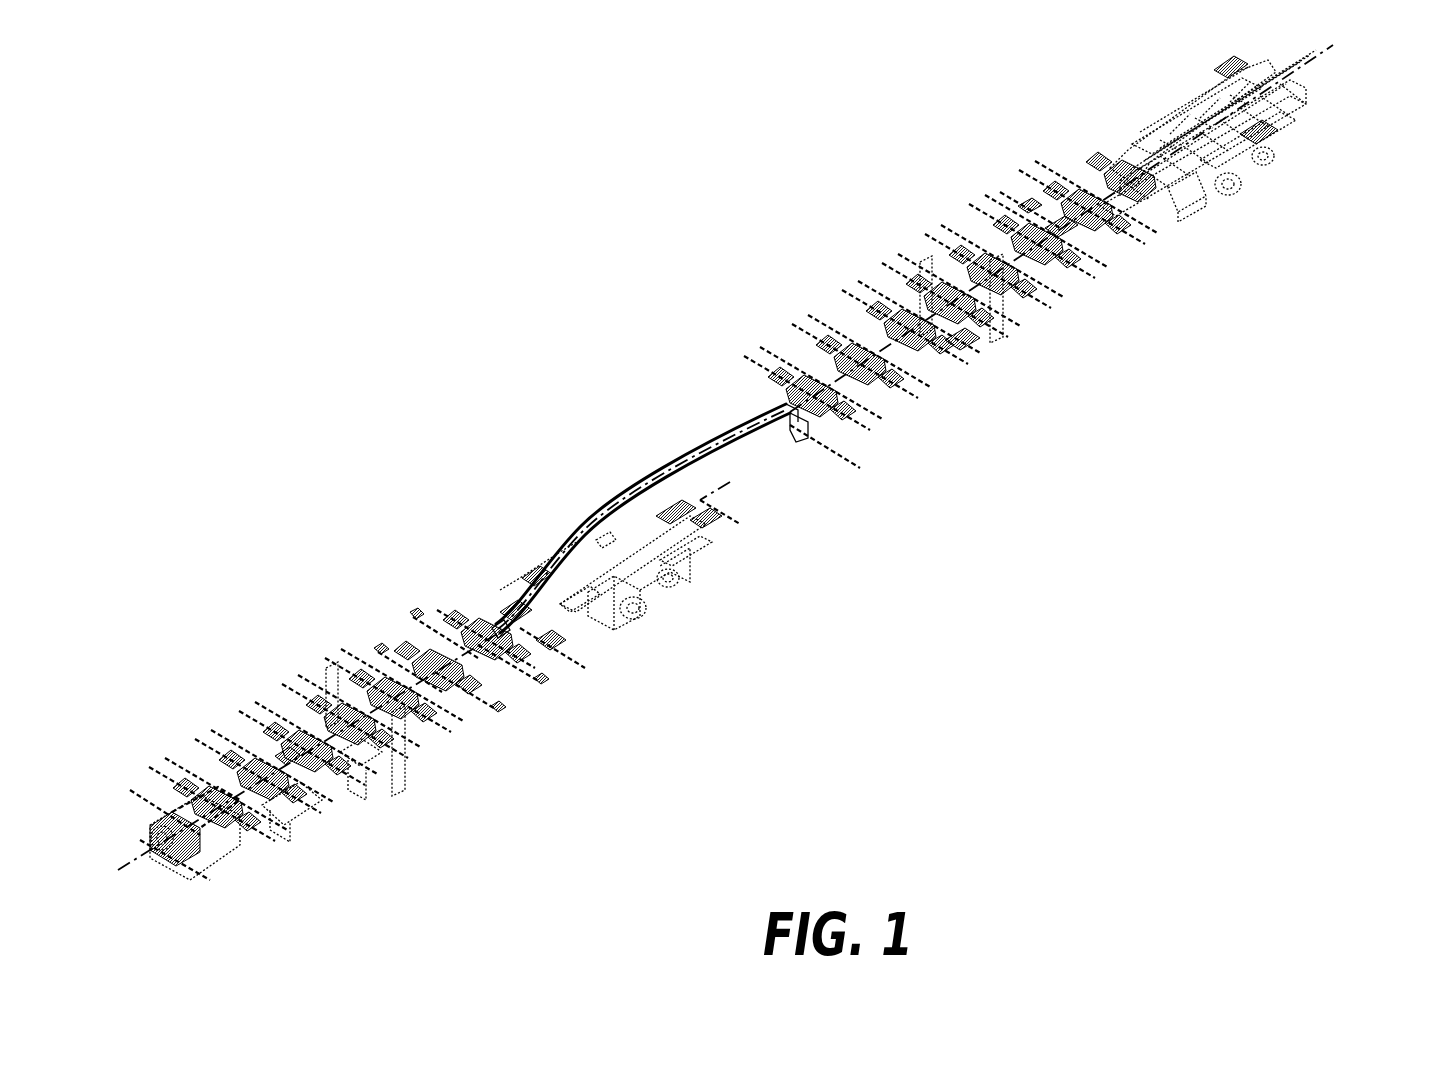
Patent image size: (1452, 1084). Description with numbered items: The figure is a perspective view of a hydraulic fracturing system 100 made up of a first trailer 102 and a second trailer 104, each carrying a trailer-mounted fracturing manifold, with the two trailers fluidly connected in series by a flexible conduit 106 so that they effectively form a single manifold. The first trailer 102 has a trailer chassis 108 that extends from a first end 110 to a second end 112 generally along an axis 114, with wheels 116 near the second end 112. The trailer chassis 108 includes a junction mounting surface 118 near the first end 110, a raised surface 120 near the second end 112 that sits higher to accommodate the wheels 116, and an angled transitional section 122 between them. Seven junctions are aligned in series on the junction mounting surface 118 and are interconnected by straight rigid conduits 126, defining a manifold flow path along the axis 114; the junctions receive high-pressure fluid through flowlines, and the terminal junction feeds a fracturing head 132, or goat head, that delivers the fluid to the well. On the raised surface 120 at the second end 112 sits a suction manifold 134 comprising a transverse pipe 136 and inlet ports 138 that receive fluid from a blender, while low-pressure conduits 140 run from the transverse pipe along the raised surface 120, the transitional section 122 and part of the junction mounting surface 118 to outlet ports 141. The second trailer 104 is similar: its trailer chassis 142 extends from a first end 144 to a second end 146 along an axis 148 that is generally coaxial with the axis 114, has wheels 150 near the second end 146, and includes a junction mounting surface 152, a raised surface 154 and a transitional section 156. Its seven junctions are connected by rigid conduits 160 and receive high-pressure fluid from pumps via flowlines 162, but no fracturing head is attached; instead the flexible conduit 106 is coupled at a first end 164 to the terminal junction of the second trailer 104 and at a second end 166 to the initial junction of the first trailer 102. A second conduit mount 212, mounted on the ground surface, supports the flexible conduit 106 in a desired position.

The hydraulic fracturing system 100 is at (375, 188).
The first trailer 102 is at (308, 463).
The second trailer 104 is at (832, 150).
The flexible conduit 106 is at (670, 470).
The trailer chassis 108 is at (290, 830).
The first end 110 is at (178, 903).
The second end 112 is at (807, 515).
The axis 114 is at (728, 483).
The wheels 116 is at (650, 593).
The junction mounting surface 118 is at (355, 757).
The raised surface 120 is at (602, 537).
The transitional section 122 is at (530, 577).
The rigid conduits 126 is at (285, 763).
The fracturing head 132 is at (157, 830).
The suction manifold 134 is at (683, 545).
The transverse pipe 136 is at (673, 510).
The inlet ports 138 is at (708, 513).
The low-pressure conduits 140 is at (575, 598).
The outlet ports 141 is at (547, 643).
The trailer chassis 142 is at (933, 385).
The first end 144 is at (837, 450).
The second end 146 is at (1320, 135).
The axis 148 is at (1333, 47).
The wheels 150 is at (1240, 184).
The junction mounting surface 152 is at (957, 343).
The raised surface 154 is at (1253, 132).
The transitional section 156 is at (1180, 197).
The rigid conduits 160 is at (1058, 230).
The flowlines 162 is at (1027, 207).
The first end 164 is at (767, 407).
The second end 166 is at (511, 600).
The second conduit mount 212 is at (1105, 135).